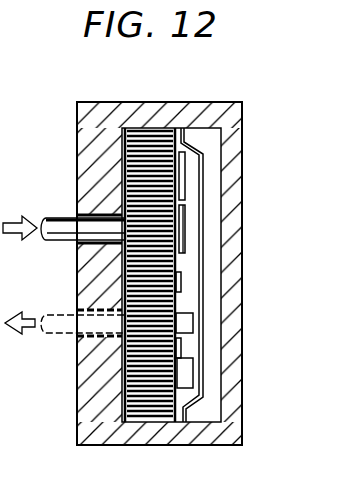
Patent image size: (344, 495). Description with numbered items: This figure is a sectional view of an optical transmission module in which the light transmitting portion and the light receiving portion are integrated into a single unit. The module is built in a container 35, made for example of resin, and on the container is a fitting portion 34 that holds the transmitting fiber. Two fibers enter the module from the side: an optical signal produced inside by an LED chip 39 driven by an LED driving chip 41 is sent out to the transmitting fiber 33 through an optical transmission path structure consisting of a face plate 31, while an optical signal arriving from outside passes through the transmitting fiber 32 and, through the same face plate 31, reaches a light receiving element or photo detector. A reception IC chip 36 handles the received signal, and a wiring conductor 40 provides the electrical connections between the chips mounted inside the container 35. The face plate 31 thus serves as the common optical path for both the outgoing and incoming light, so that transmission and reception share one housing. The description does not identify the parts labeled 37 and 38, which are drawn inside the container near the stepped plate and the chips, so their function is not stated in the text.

The face plate 31 is at (143, 128).
The transmitting fiber 32 is at (63, 222).
The transmitting fiber 33 is at (60, 312).
The fitting portion 34 is at (92, 345).
The container 35 is at (110, 428).
The reception IC chip 36 is at (185, 173).
The lower terminal 37 is at (183, 232).
The partition plate 38 is at (203, 288).
The LED chip 39 is at (187, 322).
The wiring conductor 40 is at (181, 350).
The LED driving chip 41 is at (186, 380).